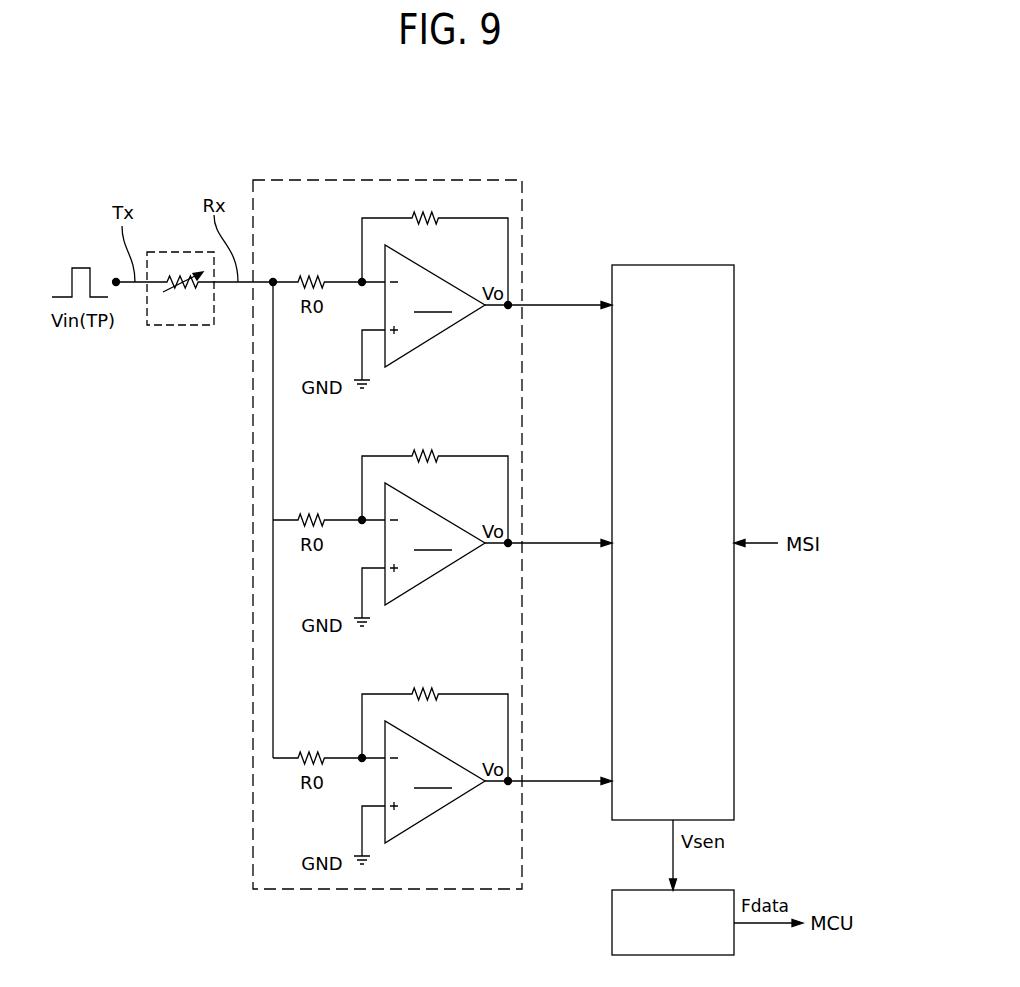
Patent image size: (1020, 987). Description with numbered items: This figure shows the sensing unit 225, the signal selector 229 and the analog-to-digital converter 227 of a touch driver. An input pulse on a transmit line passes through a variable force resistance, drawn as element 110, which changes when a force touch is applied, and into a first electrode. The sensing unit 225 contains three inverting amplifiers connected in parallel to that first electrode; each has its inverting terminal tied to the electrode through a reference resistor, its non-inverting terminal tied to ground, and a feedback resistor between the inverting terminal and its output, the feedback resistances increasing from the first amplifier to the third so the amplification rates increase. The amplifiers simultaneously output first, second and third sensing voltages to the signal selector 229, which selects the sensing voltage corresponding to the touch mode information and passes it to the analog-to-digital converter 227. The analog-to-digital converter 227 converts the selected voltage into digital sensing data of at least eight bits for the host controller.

The touch panel force sensing resistor 110 is at (178, 327).
The sensing unit 225 is at (253, 179).
The signal selector 229 is at (689, 556).
The ADC 227 is at (690, 936).